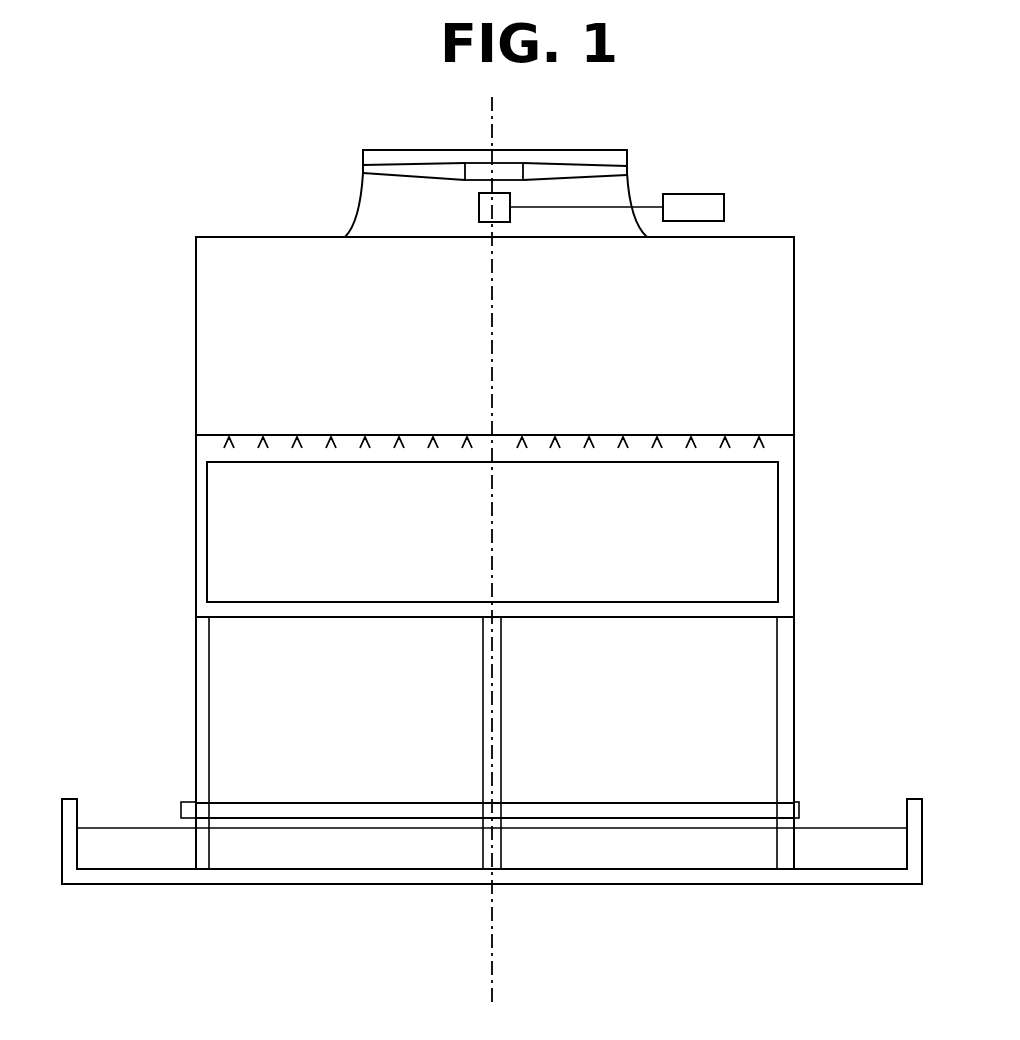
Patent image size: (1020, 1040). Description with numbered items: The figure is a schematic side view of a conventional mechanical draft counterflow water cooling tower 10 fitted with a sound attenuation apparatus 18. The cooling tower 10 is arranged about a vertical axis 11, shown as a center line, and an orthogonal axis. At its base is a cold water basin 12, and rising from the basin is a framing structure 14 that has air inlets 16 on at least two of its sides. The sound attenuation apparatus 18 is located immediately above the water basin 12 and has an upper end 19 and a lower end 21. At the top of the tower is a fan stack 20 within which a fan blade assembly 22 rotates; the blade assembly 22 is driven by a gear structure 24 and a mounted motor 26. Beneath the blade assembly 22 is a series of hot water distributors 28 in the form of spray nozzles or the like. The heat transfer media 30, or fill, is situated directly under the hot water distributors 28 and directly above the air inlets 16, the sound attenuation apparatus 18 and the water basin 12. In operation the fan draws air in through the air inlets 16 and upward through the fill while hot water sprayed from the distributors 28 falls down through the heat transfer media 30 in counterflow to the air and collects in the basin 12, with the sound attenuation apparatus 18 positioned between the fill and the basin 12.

The cooling tower 10 is at (868, 175).
The vertical axis 11 is at (497, 980).
The cold water basin 12 is at (734, 850).
The framing structure 14 is at (196, 578).
The air inlets 16 is at (140, 711).
The sound attenuation apparatus 18 is at (181, 810).
The upper end 19 is at (570, 803).
The fan stack 20 is at (627, 175).
The lower end 21 is at (610, 822).
The fan blade assembly 22 is at (475, 170).
The gear structure 24 is at (479, 208).
The motor 26 is at (724, 205).
The hot water distributors 28 is at (770, 434).
The heat transfer media 30 is at (492, 532).